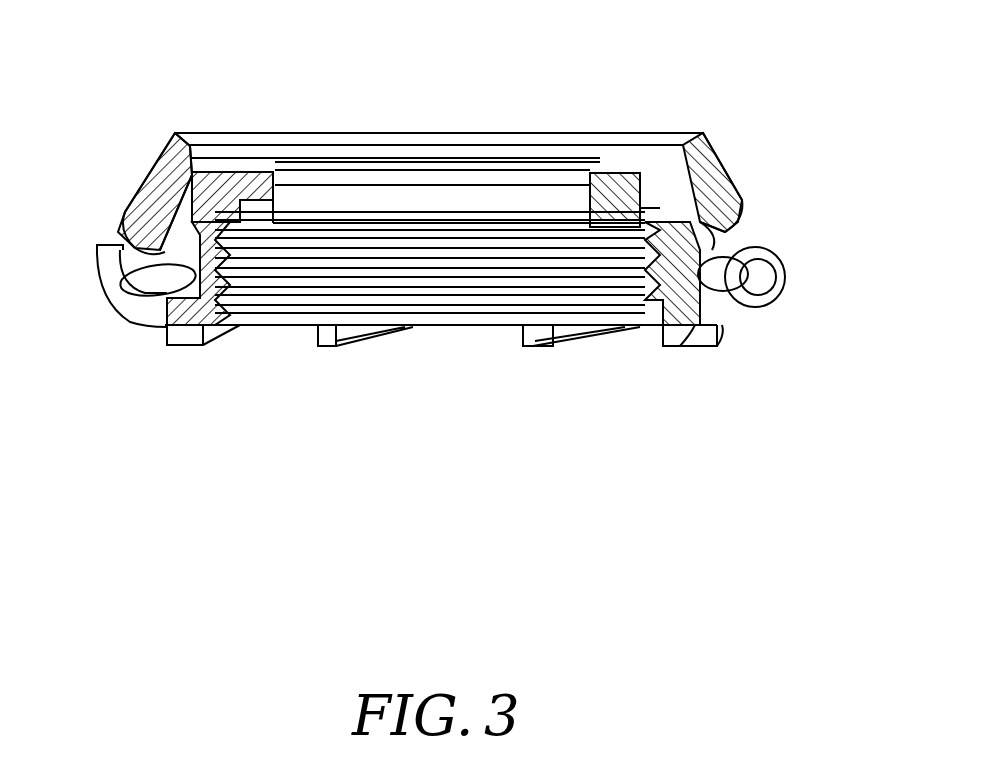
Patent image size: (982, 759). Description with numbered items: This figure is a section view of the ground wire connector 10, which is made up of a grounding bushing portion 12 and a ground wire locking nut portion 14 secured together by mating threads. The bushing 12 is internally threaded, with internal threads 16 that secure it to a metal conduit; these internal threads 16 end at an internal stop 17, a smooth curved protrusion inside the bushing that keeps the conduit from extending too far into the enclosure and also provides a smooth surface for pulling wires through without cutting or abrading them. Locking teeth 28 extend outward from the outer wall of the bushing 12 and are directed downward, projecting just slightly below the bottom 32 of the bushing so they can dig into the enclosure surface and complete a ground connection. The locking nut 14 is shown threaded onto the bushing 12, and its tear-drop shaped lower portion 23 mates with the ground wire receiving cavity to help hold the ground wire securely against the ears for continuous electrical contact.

The ground wire connector 10 is at (728, 122).
The grounding bushing portion 12 is at (100, 296).
The ground wire locking nut portion 14 is at (733, 222).
The internal threads 16 is at (267, 293).
The internal stop 17 is at (627, 180).
The tear-drop lower portion 23 is at (723, 232).
The locking teeth 28 is at (560, 347).
The bottom 32 is at (443, 330).